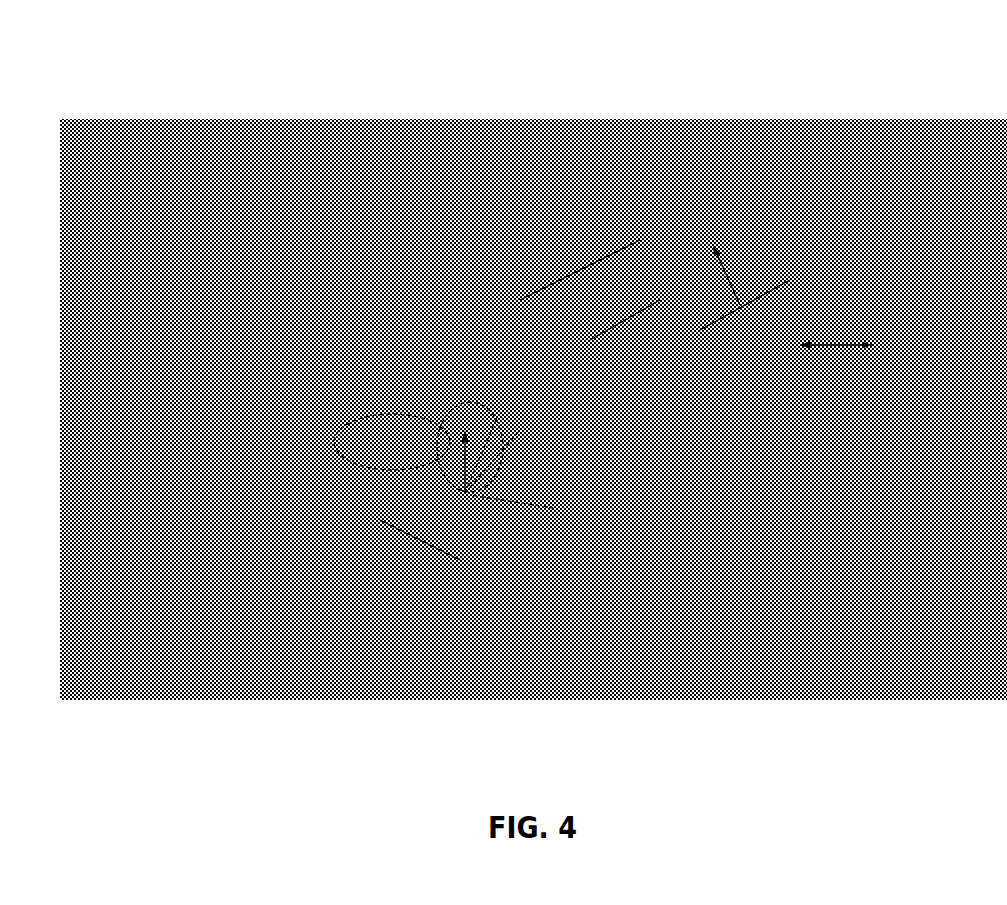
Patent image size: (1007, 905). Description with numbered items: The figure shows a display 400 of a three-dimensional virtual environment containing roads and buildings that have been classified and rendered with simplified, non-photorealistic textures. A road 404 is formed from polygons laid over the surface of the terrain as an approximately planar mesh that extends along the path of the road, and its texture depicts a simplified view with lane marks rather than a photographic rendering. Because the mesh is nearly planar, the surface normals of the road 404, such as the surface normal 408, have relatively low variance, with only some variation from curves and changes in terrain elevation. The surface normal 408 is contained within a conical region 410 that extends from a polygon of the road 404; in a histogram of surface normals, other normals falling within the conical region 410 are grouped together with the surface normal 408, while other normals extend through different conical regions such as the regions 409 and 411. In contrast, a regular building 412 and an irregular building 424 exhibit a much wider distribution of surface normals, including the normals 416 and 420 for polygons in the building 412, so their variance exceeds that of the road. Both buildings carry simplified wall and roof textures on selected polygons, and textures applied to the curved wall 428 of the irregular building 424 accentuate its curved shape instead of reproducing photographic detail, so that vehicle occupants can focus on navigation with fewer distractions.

The display 400 is at (220, 70).
The road 404 is at (407, 517).
The surface normal 408 is at (483, 493).
The conical region 409 is at (357, 450).
The conical region 410 is at (400, 400).
The conical region 411 is at (553, 508).
The regular building 412 is at (738, 308).
The surface normal 416 is at (704, 268).
The surface normal 420 is at (818, 345).
The irregular building 424 is at (565, 300).
The curved wall 428 is at (605, 335).